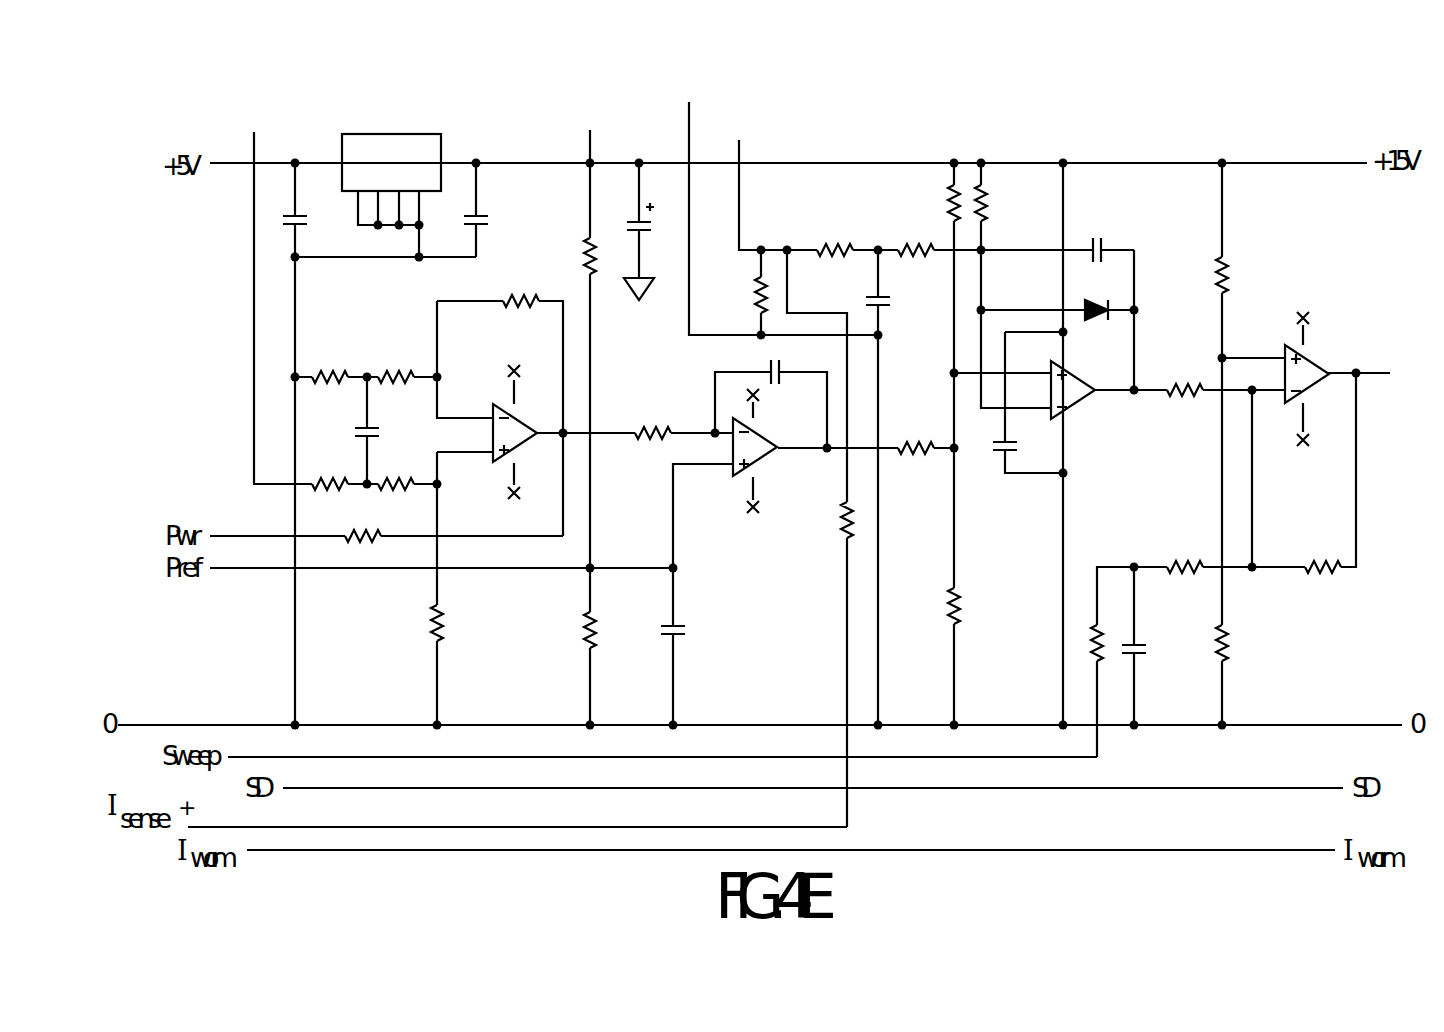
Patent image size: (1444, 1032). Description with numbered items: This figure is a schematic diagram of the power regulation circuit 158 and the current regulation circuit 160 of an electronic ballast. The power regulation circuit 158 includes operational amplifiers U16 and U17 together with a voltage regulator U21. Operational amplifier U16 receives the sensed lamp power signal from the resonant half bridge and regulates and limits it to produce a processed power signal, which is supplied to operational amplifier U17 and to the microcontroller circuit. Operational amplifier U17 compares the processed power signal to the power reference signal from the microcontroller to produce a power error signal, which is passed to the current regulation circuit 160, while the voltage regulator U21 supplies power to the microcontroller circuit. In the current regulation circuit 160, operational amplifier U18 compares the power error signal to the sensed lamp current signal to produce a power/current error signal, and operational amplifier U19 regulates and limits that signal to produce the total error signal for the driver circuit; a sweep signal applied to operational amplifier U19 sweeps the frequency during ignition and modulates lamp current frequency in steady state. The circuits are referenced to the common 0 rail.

The power regulation circuit 158 is at (510, 133).
The current regulation circuit 160 is at (1153, 137).
The ground reference 0 is at (640, 247).
The voltage regulator U21 is at (408, 175).
The operational amplifier U16 is at (491, 432).
The operational amplifier U17 is at (774, 451).
The operational amplifier U18 is at (1085, 382).
The operational amplifier U19 is at (1319, 379).